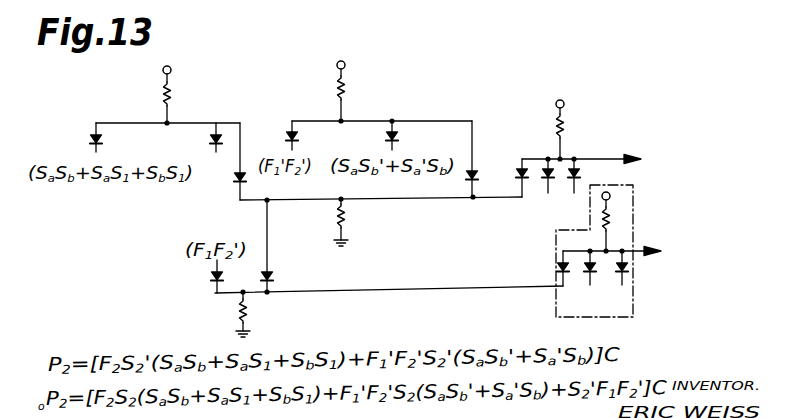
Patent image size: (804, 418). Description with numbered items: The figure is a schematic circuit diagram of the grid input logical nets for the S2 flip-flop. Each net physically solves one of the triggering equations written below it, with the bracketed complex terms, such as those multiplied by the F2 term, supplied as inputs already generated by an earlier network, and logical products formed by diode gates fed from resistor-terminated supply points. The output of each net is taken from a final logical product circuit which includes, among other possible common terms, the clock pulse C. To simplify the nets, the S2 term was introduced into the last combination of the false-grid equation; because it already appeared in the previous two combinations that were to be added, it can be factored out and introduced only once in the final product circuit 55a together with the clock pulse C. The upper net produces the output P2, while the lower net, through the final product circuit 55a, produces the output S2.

The final product circuit 55a is at (626, 251).
The output P2 gate P2 is at (590, 161).
The S2 flip-flop term S2 is at (625, 279).
The clock pulse C is at (571, 189).
The F2 term F2 is at (220, 153).